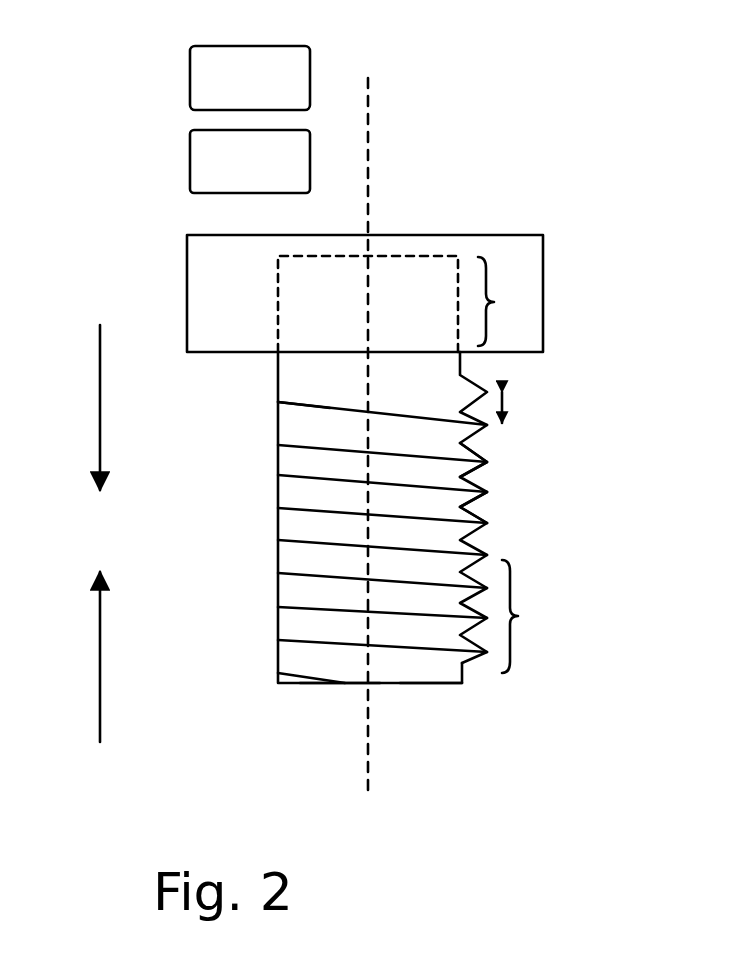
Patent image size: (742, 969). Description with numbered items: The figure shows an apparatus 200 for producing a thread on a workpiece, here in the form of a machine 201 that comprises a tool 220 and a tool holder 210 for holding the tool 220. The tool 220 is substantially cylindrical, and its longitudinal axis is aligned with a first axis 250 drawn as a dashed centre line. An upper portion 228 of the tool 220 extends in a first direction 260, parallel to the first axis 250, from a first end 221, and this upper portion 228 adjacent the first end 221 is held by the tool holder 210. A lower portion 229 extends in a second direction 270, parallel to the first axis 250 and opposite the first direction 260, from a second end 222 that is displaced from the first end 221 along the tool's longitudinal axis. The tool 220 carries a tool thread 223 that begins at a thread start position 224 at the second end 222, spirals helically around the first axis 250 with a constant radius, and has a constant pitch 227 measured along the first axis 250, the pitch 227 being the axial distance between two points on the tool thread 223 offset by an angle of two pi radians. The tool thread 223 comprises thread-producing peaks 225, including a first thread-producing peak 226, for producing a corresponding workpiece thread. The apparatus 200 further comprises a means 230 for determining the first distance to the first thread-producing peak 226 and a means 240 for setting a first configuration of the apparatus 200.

The apparatus 200 is at (113, 56).
The machine 201 is at (614, 143).
The tool holder 210 is at (548, 252).
The tool 220 is at (238, 468).
The first end 221 is at (407, 250).
The second end 222 is at (417, 690).
The tool thread 223 is at (290, 437).
The thread start position 224 is at (343, 690).
The thread-producing peaks 225 is at (495, 462).
The first thread-producing peak 226 is at (495, 517).
The pitch 227 is at (510, 403).
The upper portion 228 is at (512, 301).
The lower portion 229 is at (537, 616).
The means for determining the first distance 230 is at (190, 112).
The means for setting a first configuration 240 is at (190, 193).
The first axis 250 is at (370, 133).
The first direction 260 is at (98, 400).
The second direction 270 is at (100, 650).